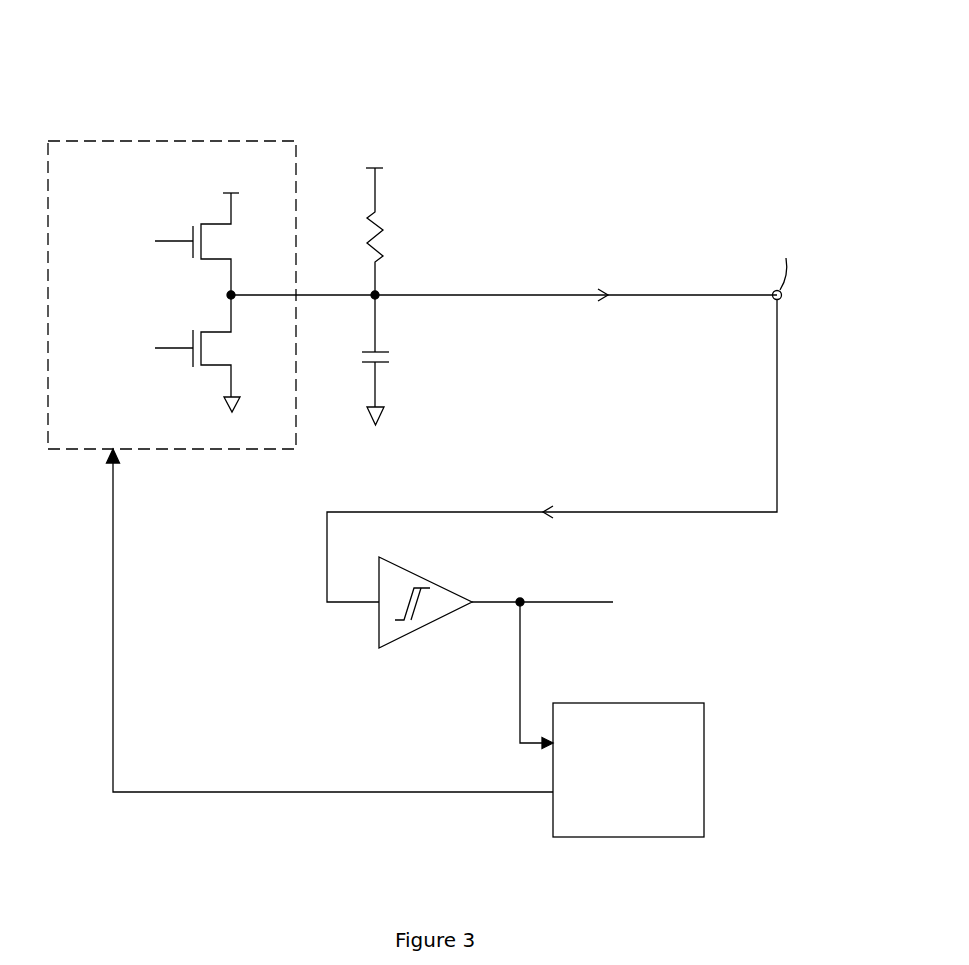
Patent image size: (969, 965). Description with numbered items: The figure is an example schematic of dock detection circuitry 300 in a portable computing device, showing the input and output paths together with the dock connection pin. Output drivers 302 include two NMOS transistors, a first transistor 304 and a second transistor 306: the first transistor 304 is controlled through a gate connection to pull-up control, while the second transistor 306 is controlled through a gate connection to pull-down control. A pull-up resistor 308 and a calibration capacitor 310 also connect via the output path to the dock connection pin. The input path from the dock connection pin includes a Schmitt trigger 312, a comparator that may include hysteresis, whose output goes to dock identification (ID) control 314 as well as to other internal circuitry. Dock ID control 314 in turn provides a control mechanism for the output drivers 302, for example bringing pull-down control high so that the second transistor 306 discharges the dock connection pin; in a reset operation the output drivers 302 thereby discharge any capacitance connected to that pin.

The dock detection circuitry 300 is at (538, 37).
The output drivers 302 is at (201, 140).
The transistor M304 304 is at (209, 244).
The transistor M306 306 is at (209, 353).
The pull-up resistor R308 308 is at (403, 233).
The calibration capacitor C310 310 is at (402, 360).
The Schmitt trigger 312 is at (440, 594).
The dock identification (ID) control 314 is at (628, 770).